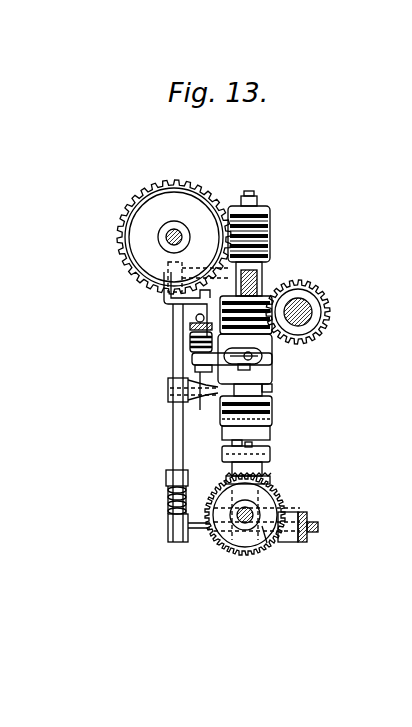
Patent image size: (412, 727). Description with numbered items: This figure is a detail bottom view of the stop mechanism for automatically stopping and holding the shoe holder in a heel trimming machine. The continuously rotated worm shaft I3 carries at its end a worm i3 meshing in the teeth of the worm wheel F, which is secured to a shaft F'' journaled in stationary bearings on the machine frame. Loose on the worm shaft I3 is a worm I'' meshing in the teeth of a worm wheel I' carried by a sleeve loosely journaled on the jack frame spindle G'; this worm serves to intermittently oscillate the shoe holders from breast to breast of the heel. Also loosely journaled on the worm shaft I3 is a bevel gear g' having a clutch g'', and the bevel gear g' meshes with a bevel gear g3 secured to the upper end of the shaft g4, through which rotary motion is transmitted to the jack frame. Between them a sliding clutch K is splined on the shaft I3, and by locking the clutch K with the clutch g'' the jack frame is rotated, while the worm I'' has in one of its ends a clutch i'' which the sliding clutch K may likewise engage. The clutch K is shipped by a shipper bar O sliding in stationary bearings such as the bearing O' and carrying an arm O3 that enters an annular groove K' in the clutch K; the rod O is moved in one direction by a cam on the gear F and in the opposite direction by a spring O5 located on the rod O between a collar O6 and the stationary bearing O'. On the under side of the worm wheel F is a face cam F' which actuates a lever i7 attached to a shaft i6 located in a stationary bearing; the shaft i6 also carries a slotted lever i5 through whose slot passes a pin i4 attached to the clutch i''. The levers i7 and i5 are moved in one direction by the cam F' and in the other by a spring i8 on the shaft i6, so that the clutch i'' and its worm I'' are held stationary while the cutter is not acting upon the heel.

The worm wheel F is at (160, 237).
The face cam F' is at (153, 237).
The shaft F'' is at (174, 228).
The worm shaft I3 is at (249, 195).
The worm i3 is at (259, 234).
The worm I'' is at (258, 296).
The worm wheel I' is at (321, 304).
The jack frame spindle G' is at (317, 312).
The lever i7 is at (164, 303).
The spring i8 is at (192, 338).
The slotted lever i5 is at (192, 359).
The clutch i'' is at (258, 359).
The pin i4 is at (262, 356).
The arm O3 is at (168, 389).
The annular groove K' is at (265, 387).
The shipper bar O is at (159, 423).
The shaft i6 is at (200, 410).
The sliding clutch K is at (257, 421).
The clutch g'' is at (262, 460).
The bevel gear g' is at (264, 479).
The bevel gear g3 is at (286, 503).
The collar O6 is at (166, 479).
The spring O5 is at (168, 501).
The stationary bearing O' is at (170, 528).
The shaft g4 is at (264, 547).